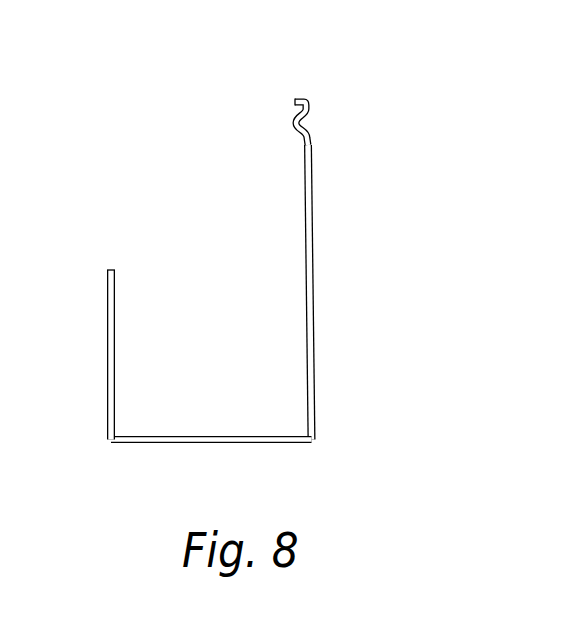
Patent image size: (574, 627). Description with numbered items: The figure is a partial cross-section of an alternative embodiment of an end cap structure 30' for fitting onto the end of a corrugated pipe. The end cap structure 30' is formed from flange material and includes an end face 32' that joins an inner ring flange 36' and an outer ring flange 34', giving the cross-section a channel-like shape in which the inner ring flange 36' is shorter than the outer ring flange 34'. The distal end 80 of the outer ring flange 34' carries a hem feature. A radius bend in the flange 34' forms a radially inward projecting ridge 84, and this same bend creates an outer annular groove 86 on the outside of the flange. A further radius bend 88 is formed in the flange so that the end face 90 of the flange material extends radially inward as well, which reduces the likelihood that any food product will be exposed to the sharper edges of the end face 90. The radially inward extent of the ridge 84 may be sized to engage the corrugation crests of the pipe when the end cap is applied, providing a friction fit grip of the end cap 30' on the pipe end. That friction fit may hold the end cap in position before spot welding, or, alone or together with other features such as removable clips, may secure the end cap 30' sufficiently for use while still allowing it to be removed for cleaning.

The end cap structure 30' is at (260, 249).
The end face 32' is at (224, 468).
The outer ring flange 34' is at (364, 292).
The inner ring flange 36' is at (75, 370).
The distal end 80 is at (363, 42).
The radially inward projecting ridge 84 is at (290, 130).
The outer annular groove 86 is at (365, 172).
The radius bend 88 is at (305, 100).
The end face of the flange material 90 is at (290, 105).